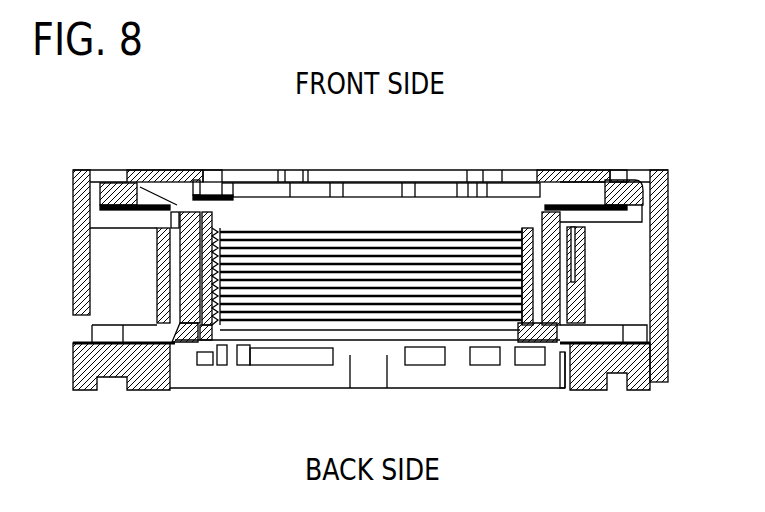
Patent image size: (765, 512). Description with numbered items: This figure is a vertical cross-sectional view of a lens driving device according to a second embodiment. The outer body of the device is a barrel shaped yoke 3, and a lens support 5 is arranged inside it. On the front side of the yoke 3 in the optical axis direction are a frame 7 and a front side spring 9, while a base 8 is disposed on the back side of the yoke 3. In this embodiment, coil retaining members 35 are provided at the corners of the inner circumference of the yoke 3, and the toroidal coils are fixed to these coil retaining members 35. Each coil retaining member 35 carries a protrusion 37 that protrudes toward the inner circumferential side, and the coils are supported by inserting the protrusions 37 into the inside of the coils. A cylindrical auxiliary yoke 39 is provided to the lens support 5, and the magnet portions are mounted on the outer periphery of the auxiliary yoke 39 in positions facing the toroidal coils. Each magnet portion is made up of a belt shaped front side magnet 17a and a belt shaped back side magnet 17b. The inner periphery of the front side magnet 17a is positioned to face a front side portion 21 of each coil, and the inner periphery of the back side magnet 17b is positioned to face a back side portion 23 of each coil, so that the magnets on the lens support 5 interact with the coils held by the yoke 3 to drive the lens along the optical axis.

The yoke 3 is at (670, 250).
The lens support 5 is at (450, 333).
The frame 7 is at (575, 168).
The base 8 is at (585, 367).
The front side spring 9 is at (452, 170).
The front side magnet 17a is at (187, 203).
The back side magnet 17b is at (200, 340).
The front side portion 21 is at (135, 176).
The back side portion 23 is at (175, 350).
The coil retaining member 35 is at (103, 243).
The protrusion 37 is at (157, 272).
The auxiliary yoke 39 is at (217, 223).